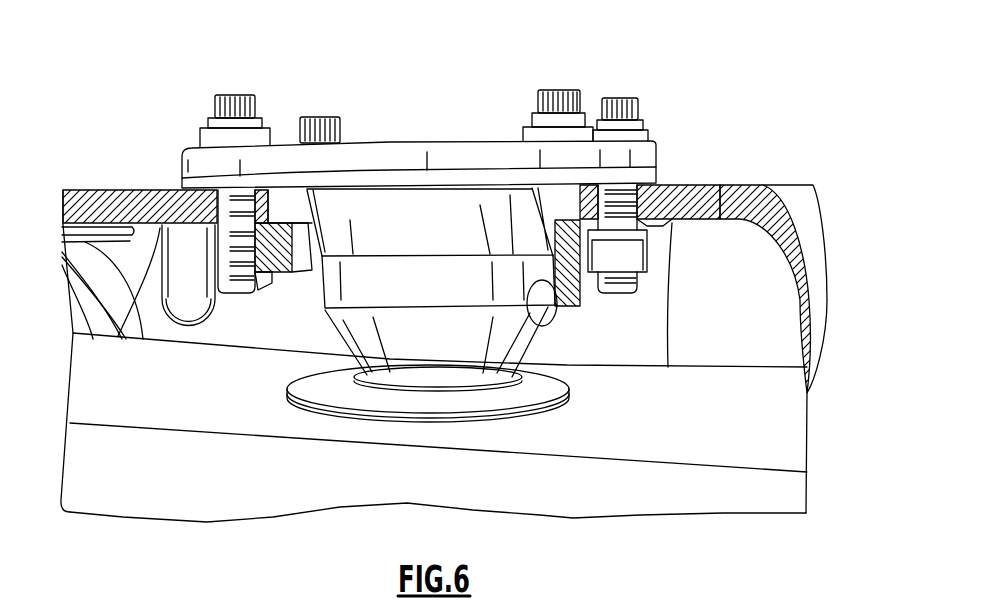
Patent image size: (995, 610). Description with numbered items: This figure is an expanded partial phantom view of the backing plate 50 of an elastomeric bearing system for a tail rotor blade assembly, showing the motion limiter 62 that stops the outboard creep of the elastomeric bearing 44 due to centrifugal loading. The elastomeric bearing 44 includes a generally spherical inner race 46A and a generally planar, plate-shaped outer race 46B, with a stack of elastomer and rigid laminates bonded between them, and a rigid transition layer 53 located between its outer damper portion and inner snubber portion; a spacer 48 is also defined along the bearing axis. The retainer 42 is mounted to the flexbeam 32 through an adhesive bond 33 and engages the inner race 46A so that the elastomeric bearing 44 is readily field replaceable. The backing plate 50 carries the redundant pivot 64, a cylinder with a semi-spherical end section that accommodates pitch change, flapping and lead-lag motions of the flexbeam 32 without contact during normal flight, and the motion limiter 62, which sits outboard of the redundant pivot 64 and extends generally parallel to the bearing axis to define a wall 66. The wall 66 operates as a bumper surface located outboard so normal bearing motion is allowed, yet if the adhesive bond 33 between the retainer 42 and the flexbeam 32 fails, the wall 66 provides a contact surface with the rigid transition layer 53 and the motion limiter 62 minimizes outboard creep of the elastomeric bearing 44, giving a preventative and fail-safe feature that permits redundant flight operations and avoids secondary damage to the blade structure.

The flexbeam 32 is at (783, 431).
The adhesive bond 33 is at (333, 409).
The retainer 42 is at (538, 416).
The elastomeric bearing 44 is at (298, 320).
The inner race 46A is at (548, 383).
The outer race 46B is at (654, 155).
The spacer 48 is at (654, 181).
The backing plate 50 is at (658, 227).
The rigid transition layer 53 is at (462, 298).
The motion limiter 62 is at (578, 294).
The redundant pivot 64 is at (156, 284).
The wall 66 is at (538, 334).